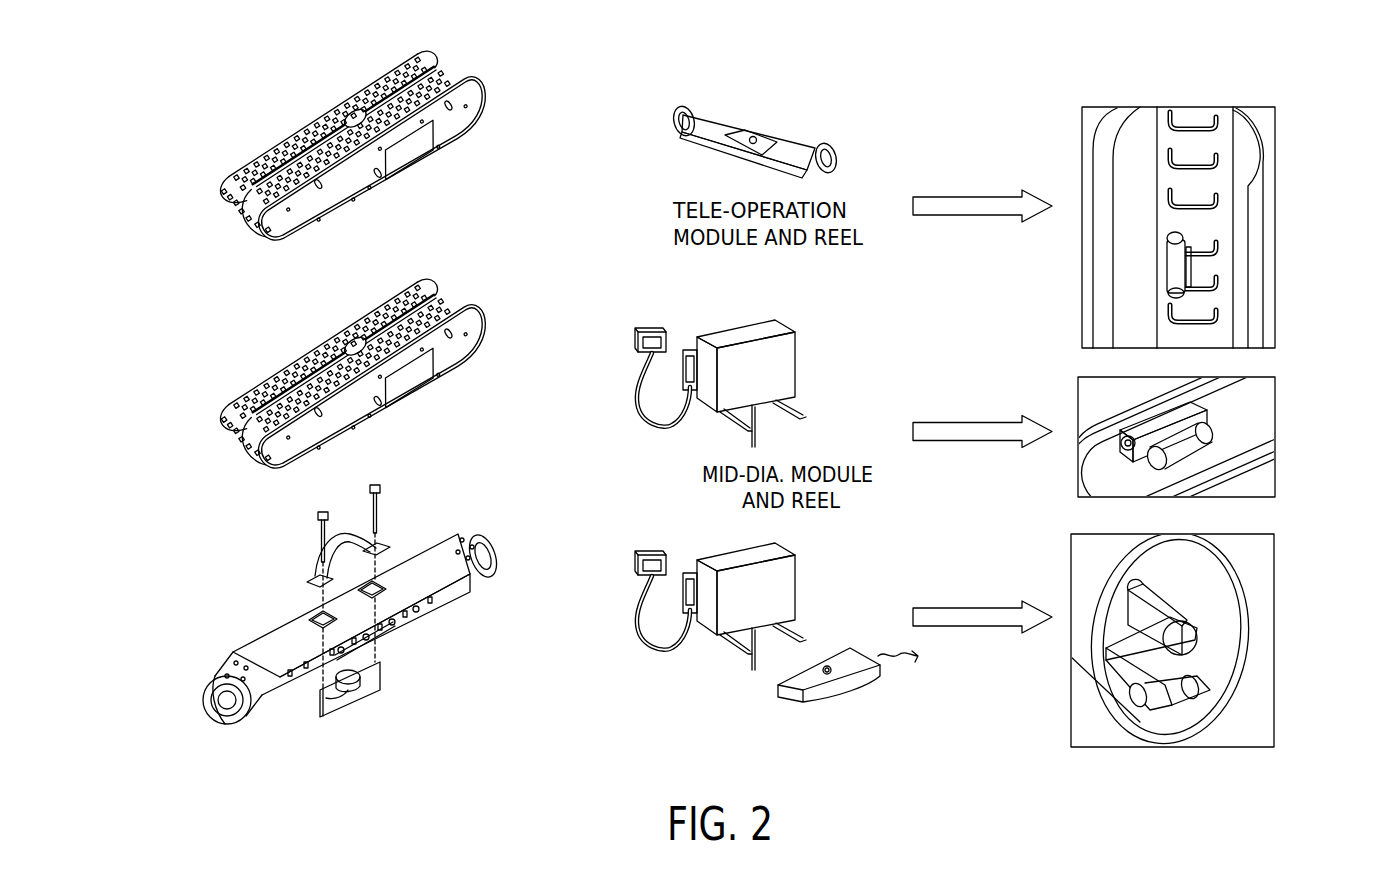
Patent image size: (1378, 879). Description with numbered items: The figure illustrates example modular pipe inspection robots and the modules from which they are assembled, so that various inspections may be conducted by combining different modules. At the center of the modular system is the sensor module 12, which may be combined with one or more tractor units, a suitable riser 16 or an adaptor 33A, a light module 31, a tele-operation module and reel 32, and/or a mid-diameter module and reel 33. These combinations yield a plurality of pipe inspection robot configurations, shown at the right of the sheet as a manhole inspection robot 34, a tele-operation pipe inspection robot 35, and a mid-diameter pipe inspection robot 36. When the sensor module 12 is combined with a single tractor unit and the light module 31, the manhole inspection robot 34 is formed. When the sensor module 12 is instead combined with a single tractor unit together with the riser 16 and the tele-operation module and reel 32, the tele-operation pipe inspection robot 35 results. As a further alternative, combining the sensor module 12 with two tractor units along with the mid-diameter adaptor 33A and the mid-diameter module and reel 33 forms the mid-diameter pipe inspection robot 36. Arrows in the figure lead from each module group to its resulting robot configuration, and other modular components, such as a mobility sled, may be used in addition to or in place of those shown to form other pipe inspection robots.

The sensor module 12 is at (288, 626).
The riser 16 is at (375, 677).
The light module 31 is at (773, 137).
The tele-operation module and reel 32 is at (727, 332).
The mid-diameter module and reel 33 is at (722, 556).
The mid-diameter adaptor 33A is at (850, 695).
The manhole inspection robot 34 is at (1270, 162).
The tele-operation pipe inspection robot 35 is at (1270, 413).
The mid-diameter pipe inspection robot 36 is at (1272, 587).